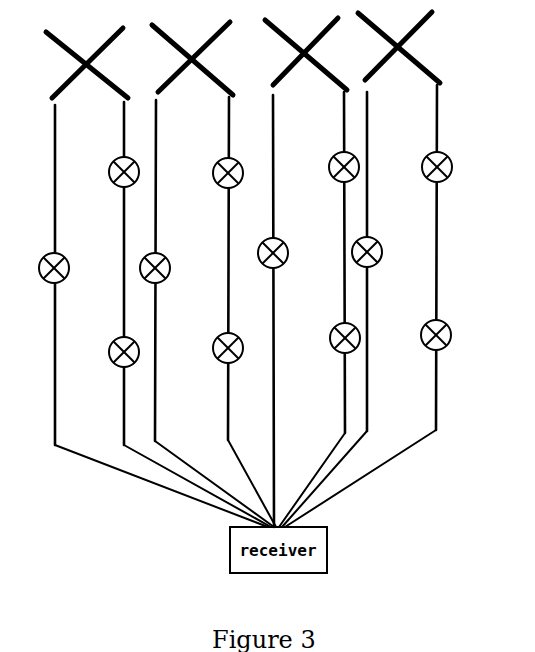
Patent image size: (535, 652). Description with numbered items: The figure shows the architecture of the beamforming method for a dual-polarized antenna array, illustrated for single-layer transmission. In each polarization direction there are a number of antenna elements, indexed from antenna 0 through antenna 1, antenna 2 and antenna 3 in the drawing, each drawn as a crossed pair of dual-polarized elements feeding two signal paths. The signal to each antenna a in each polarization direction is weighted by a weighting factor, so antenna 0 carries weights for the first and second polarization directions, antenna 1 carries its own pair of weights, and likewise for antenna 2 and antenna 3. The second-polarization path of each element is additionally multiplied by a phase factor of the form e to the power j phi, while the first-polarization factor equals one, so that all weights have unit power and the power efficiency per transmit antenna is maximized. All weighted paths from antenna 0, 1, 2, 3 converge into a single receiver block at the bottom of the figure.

The antenna branch 0 (antenna, phase shifter, weights w^0) 0 is at (150, 277).
The antenna branch 1 (antenna, phase shifter, weights w^1) 1 is at (207, 274).
The antenna branch 2 (antenna, phase shifter, weights w^2) 2 is at (307, 272).
The antenna branch 3 (antenna, phase shifter, weights w^3) 3 is at (376, 269).